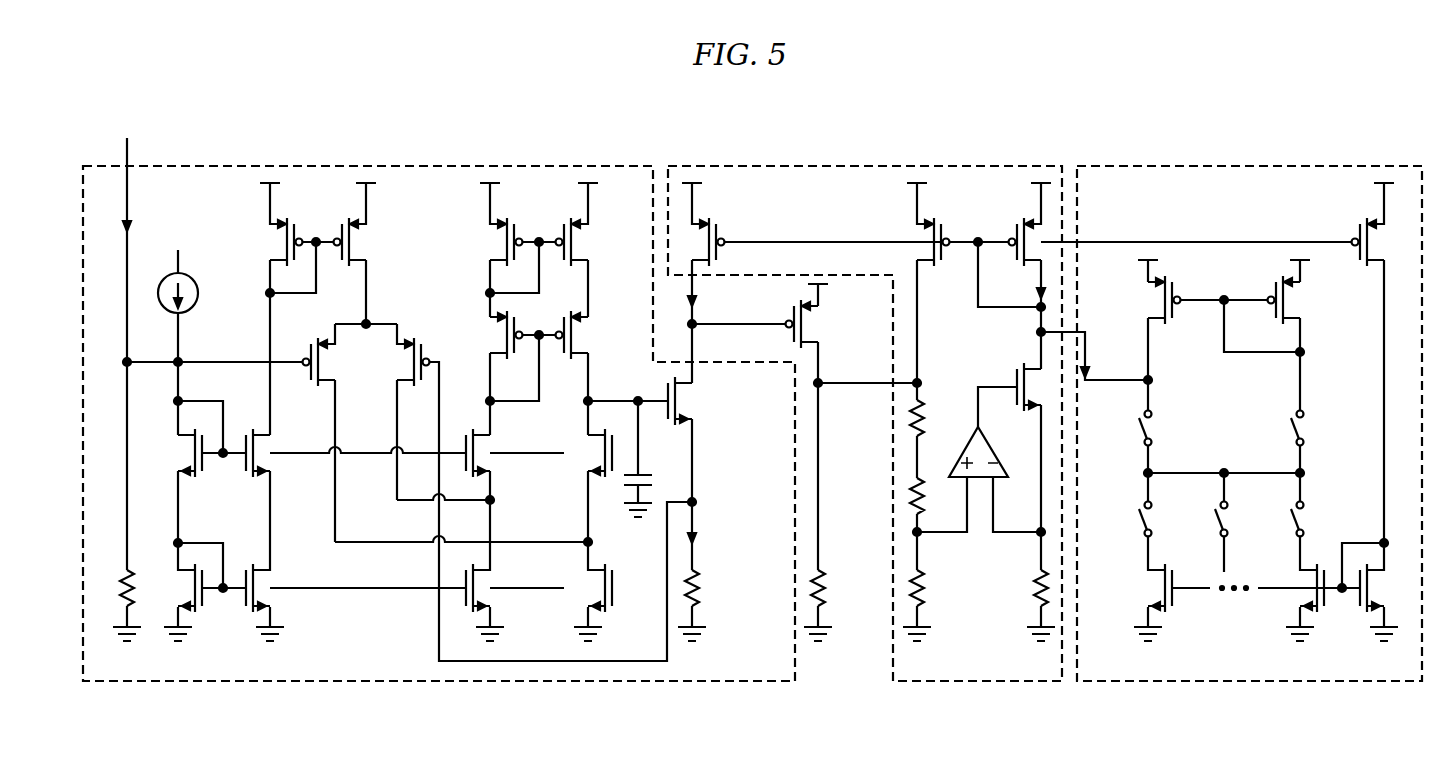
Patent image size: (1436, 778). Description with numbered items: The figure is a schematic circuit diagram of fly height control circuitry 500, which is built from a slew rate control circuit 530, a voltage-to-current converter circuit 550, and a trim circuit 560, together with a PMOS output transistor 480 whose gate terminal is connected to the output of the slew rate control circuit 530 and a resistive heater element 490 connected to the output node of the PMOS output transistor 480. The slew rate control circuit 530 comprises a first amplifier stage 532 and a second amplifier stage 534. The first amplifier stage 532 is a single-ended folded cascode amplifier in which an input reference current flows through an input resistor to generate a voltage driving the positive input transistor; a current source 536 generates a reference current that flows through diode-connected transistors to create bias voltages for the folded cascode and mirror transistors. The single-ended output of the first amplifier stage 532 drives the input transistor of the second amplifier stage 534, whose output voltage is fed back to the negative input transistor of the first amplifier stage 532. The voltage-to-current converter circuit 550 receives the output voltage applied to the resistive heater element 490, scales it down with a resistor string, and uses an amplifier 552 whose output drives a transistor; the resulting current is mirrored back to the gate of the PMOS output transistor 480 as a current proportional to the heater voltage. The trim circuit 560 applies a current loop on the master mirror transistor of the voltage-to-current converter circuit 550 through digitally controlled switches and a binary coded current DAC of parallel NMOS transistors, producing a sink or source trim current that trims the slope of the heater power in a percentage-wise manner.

The fly height control circuitry 500 is at (721, 106).
The slew rate control circuit 530 is at (430, 167).
The first amplifier stage 532 is at (110, 690).
The second amplifier stage 534 is at (660, 690).
The current source 536 is at (192, 312).
The voltage-to-current converter circuit 550 is at (844, 167).
The amplifier 552 is at (993, 452).
The PMOS output transistor 480 is at (790, 333).
The resistive heater element 490 is at (820, 576).
The trim circuit 560 is at (1222, 167).